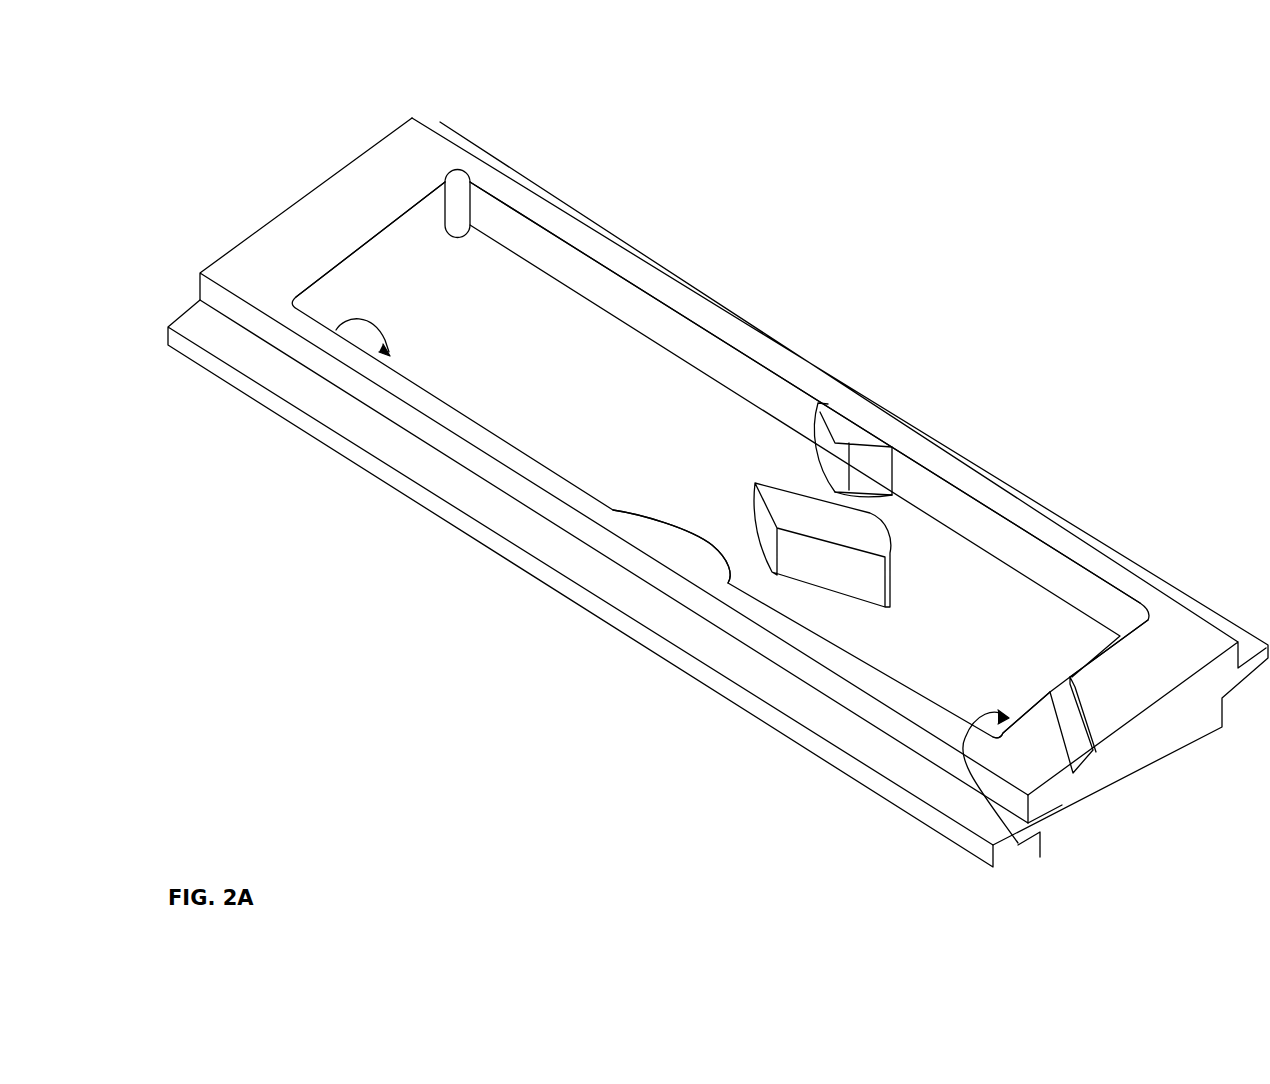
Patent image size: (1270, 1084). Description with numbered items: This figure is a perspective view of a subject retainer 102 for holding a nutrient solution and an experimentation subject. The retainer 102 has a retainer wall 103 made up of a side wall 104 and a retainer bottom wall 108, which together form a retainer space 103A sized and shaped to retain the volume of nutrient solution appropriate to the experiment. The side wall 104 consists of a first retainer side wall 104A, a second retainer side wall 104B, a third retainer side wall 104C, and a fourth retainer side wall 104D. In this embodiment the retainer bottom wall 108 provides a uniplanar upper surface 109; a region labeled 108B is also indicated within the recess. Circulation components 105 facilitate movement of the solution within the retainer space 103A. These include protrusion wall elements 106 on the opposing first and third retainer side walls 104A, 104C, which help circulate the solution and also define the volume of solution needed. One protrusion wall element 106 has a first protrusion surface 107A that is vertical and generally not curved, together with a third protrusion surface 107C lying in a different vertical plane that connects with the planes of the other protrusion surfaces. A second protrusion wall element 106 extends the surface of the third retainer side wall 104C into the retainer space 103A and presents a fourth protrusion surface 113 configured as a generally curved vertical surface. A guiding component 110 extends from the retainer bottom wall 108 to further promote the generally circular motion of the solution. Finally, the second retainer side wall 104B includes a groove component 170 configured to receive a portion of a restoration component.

The retainer 102 is at (262, 133).
The retainer wall 103 is at (403, 499).
The retainer space 103A is at (595, 370).
The side wall 104 is at (406, 409).
The first retainer side wall 104A is at (578, 282).
The second retainer side wall 104B is at (1022, 848).
The third retainer side wall 104C is at (300, 344).
The fourth retainer side wall 104D is at (424, 219).
The circulation components 105 is at (477, 568).
The protrusion wall element 106 is at (658, 533).
The first protrusion surface 107A is at (860, 459).
The third protrusion surface 107C is at (860, 459).
The retainer bottom wall 108 is at (990, 585).
The latch surface 108B is at (851, 531).
The uniplanar upper surface 109 is at (1050, 632).
The guiding component 110 is at (851, 531).
The fourth protrusion surface 113 is at (720, 538).
The groove component 170 is at (1073, 737).